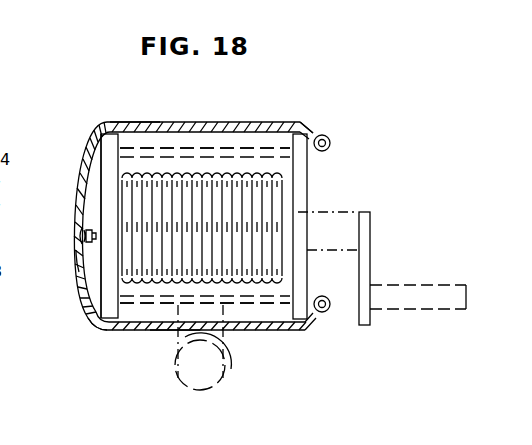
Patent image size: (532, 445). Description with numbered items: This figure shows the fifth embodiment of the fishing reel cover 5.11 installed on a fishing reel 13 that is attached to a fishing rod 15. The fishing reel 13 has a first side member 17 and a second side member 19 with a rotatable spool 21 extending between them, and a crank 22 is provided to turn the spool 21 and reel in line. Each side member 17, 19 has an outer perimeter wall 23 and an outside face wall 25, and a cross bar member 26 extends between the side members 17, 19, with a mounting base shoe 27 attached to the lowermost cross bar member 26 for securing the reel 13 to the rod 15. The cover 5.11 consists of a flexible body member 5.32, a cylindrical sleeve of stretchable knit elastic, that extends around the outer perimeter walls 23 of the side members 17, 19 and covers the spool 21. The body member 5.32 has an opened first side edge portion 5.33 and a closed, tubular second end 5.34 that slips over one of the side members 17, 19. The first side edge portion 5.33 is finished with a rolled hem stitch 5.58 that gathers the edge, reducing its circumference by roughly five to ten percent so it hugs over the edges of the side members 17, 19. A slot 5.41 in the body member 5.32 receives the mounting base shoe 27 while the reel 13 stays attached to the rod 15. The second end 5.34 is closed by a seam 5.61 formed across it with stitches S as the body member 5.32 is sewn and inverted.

The fishing reel cover 5.11 is at (294, 89).
The flexible body member 5.32 is at (142, 121).
The outer perimeter wall 23 is at (120, 127).
The rotatable spool 21 is at (165, 188).
The cross bar member 26 is at (205, 152).
The first side edge portion 5.33 is at (313, 128).
The rolled hem stitch 5.58 is at (330, 140).
The outside face wall 25 is at (100, 200).
The fishing reel 13 is at (306, 190).
The first side member 17 is at (309, 216).
The crank 22 is at (390, 296).
The second side member 19 is at (108, 172).
The seam 5.61 is at (78, 236).
The stitches S is at (78, 262).
The second end 5.34 is at (88, 318).
The slot 5.41 is at (172, 336).
The fishing rod 15 is at (212, 390).
The mounting base shoe 27 is at (233, 364).